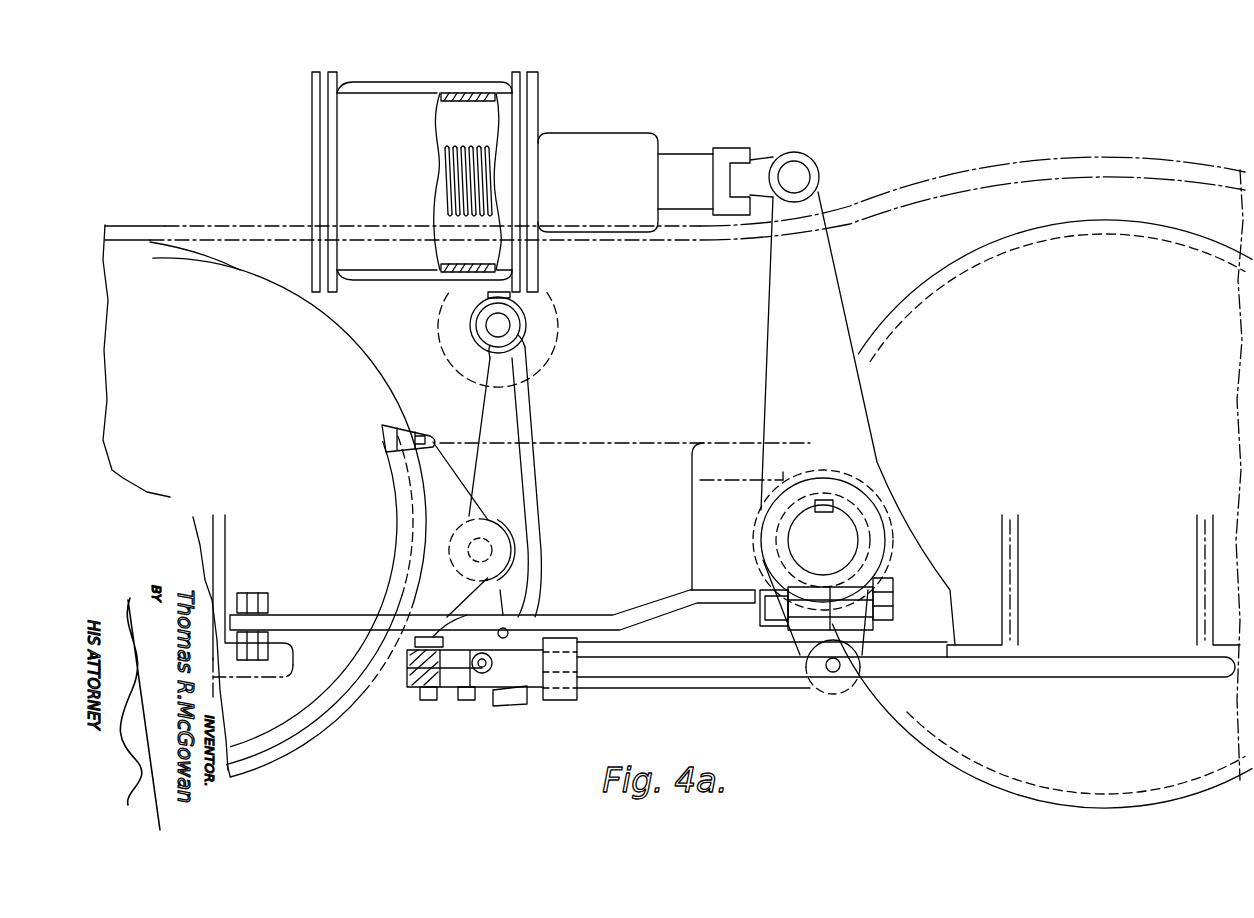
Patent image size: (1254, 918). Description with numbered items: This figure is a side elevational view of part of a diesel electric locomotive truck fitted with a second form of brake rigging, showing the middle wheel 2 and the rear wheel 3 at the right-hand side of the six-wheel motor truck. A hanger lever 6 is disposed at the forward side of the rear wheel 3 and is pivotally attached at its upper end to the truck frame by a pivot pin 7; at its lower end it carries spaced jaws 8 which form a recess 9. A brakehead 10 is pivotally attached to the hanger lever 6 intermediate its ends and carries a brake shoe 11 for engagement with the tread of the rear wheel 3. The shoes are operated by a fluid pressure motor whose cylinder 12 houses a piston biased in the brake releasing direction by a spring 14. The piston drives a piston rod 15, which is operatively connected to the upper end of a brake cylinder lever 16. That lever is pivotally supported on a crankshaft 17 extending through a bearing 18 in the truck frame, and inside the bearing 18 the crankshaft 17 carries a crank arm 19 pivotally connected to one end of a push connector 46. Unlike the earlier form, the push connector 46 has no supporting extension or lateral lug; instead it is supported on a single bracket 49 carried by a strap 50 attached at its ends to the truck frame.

The middle wheel 2 is at (932, 744).
The rear wheel 3 is at (285, 745).
The hanger lever 6 is at (527, 410).
The pivot pin 7 is at (503, 323).
The spaced jaws 8 is at (548, 633).
The recess 9 is at (480, 692).
The brakehead 10 is at (437, 462).
The brake shoe 11 is at (393, 453).
The cylinder 12 is at (350, 127).
The spring 14 is at (457, 147).
The piston rod 15 is at (757, 170).
The brake cylinder lever 16 is at (780, 320).
The crankshaft 17 is at (847, 543).
The bearing 18 is at (890, 545).
The crank arm 19 is at (860, 638).
The push connector 46 is at (762, 690).
The bracket 49 is at (560, 700).
The strap 50 is at (333, 625).